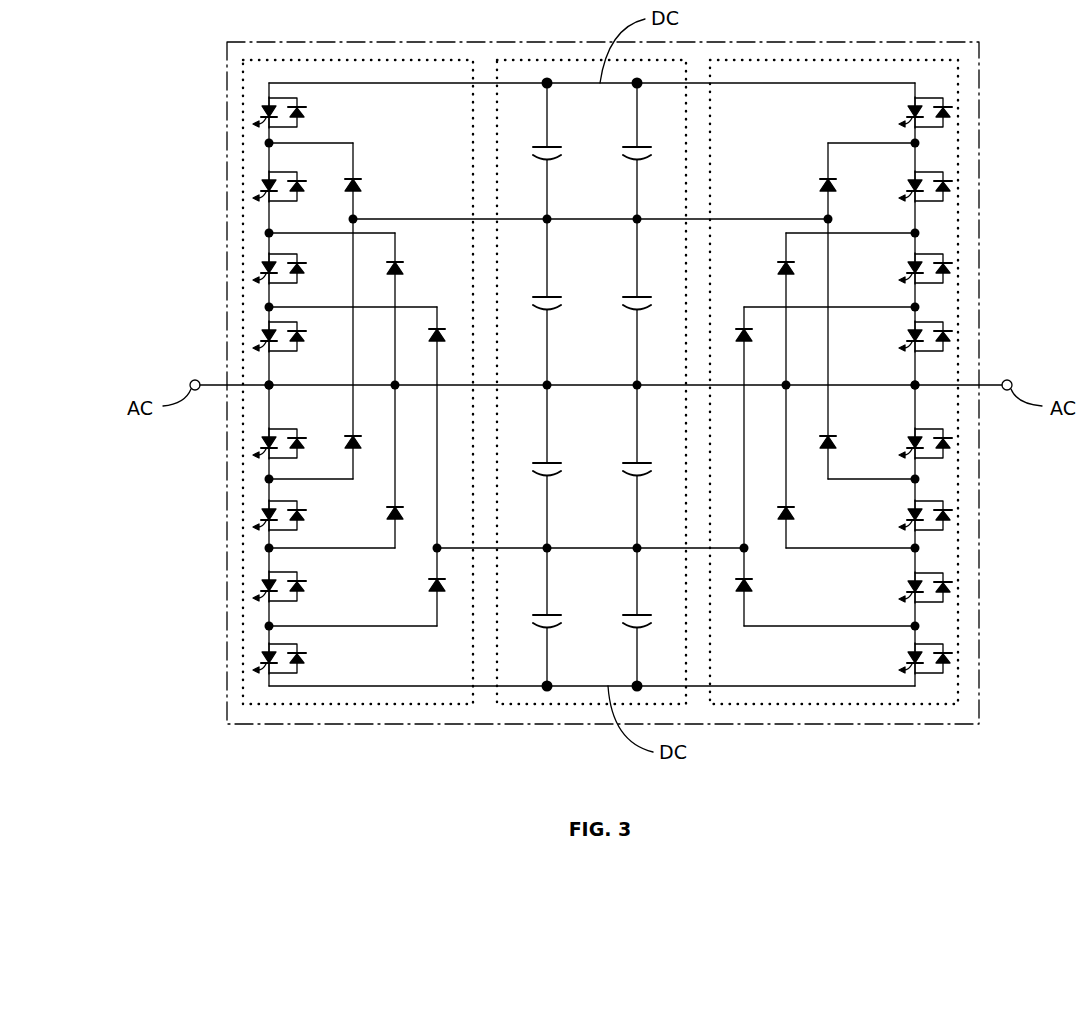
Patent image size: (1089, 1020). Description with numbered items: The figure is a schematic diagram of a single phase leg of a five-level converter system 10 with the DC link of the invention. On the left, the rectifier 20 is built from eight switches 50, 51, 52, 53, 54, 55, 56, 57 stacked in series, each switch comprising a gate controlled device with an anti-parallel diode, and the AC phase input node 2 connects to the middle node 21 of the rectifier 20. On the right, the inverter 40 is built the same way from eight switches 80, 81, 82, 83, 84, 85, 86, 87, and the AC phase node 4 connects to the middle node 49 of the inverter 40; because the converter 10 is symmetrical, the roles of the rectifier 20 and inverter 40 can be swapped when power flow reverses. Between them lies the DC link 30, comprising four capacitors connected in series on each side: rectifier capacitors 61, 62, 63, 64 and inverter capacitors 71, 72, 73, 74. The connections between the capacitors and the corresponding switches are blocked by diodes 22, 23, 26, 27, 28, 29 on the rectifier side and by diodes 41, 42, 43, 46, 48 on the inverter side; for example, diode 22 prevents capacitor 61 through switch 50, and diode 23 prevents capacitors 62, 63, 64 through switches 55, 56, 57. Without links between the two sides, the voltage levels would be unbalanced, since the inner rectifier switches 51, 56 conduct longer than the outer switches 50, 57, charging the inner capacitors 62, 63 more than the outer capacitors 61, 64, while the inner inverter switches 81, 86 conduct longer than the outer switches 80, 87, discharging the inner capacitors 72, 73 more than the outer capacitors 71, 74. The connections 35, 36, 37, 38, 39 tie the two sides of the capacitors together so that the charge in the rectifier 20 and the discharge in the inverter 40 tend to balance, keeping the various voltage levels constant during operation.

The AC phase input node 2 is at (191, 381).
The AC phase node 4 is at (1011, 381).
The five-level converter system 10 is at (303, 724).
The rectifier 20 is at (398, 704).
The middle node of the rectifier 21 is at (276, 385).
The diode 22 is at (362, 186).
The diode 23 is at (343, 443).
The diode 26 is at (404, 269).
The diode 27 is at (385, 513).
The diode 28 is at (429, 340).
The diode 29 is at (427, 586).
The DC link 30 is at (563, 704).
The connection 35 is at (580, 83).
The connection 36 is at (598, 219).
The connection 37 is at (598, 384).
The connection 38 is at (598, 548).
The connection 39 is at (598, 686).
The inverter 40 is at (905, 704).
The diode 41 is at (818, 186).
The diode 42 is at (837, 442).
The diode 43 is at (776, 269).
The diode 46 is at (796, 514).
The diode 48 is at (754, 587).
The middle node of the inverter 49 is at (908, 385).
The switch 50 is at (256, 109).
The switch 51 is at (256, 185).
The switch 52 is at (256, 268).
The switch 53 is at (256, 336).
The switch 54 is at (256, 441).
The switch 55 is at (256, 513).
The switch 56 is at (256, 584).
The switch 57 is at (256, 656).
The rectifier capacitor 61 is at (563, 154).
The rectifier capacitor 62 is at (563, 305).
The rectifier capacitor 63 is at (563, 471).
The rectifier capacitor 64 is at (563, 623).
The inverter capacitor 71 is at (621, 155).
The inverter capacitor 72 is at (621, 307).
The inverter capacitor 73 is at (621, 472).
The inverter capacitor 74 is at (621, 624).
The switch 80 is at (953, 115).
The switch 81 is at (953, 188).
The switch 82 is at (953, 270).
The switch 83 is at (953, 337).
The switch 84 is at (952, 446).
The switch 85 is at (952, 514).
The switch 86 is at (952, 591).
The switch 87 is at (952, 660).